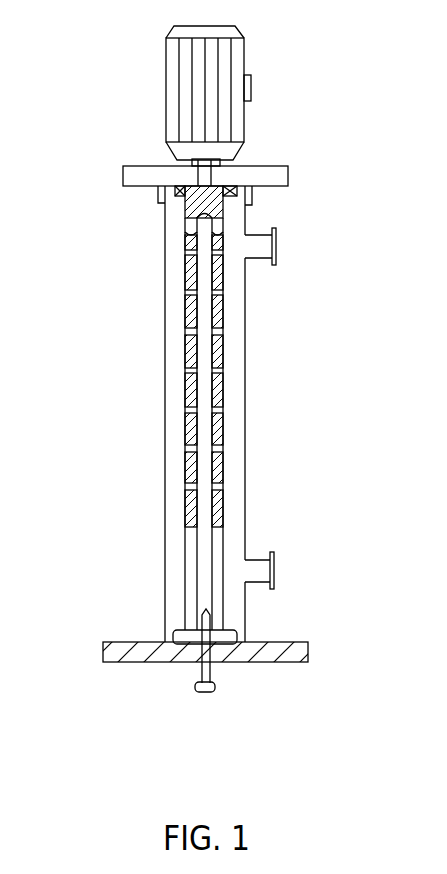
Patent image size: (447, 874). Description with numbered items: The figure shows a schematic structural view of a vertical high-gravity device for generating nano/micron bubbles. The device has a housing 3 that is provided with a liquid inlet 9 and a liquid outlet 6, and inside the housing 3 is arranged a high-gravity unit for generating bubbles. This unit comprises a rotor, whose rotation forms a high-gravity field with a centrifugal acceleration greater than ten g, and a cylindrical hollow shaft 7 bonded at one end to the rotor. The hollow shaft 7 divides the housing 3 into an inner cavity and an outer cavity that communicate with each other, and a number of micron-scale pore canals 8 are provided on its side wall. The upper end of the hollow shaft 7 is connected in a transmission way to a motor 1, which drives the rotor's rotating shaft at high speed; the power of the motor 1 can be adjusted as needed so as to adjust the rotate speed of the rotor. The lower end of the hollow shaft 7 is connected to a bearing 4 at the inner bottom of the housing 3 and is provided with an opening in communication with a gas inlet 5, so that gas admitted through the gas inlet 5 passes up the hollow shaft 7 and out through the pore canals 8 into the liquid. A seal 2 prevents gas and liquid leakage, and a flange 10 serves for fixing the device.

The motor 1 is at (166, 90).
The seal 2 is at (175, 187).
The housing 3 is at (164, 371).
The bearing 4 is at (173, 633).
The gas inlet 5 is at (195, 686).
The liquid outlet 6 is at (274, 247).
The hollow shaft 7 is at (225, 347).
The micron-scale pore canals 8 is at (222, 453).
The liquid inlet 9 is at (275, 575).
The flange 10 is at (233, 661).